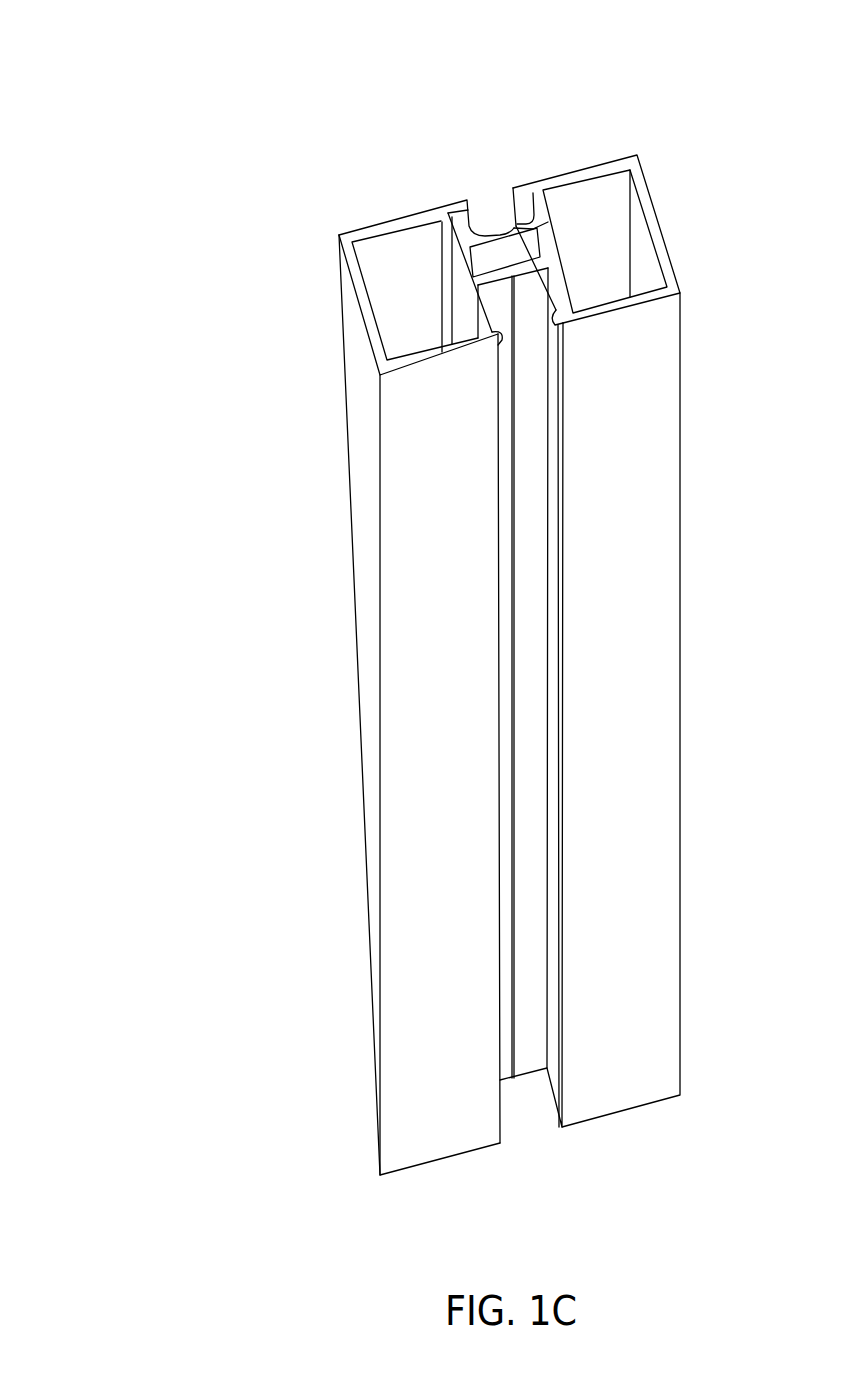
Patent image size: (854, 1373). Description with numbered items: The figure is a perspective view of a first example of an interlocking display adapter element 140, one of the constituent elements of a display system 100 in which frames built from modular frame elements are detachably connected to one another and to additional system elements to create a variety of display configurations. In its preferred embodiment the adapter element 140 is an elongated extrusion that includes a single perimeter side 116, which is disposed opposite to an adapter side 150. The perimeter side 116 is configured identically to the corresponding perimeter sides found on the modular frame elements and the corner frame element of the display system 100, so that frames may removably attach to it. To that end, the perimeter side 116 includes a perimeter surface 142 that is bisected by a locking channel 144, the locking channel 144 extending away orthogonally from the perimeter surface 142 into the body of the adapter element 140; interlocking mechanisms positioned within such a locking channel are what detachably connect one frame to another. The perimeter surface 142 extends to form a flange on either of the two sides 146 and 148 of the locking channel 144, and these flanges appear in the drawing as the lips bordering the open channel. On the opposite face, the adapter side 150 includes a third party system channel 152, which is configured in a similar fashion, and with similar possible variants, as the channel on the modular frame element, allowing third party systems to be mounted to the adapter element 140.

The display system 100 is at (133, 38).
The adapter element 140 is at (176, 114).
The perimeter side 116 is at (655, 487).
The perimeter surface 142 is at (653, 343).
The locking channel 144 is at (528, 373).
The side 146 is at (556, 318).
The side 148 is at (496, 330).
The adapter side 150 is at (575, 165).
The third party system channel 152 is at (485, 192).